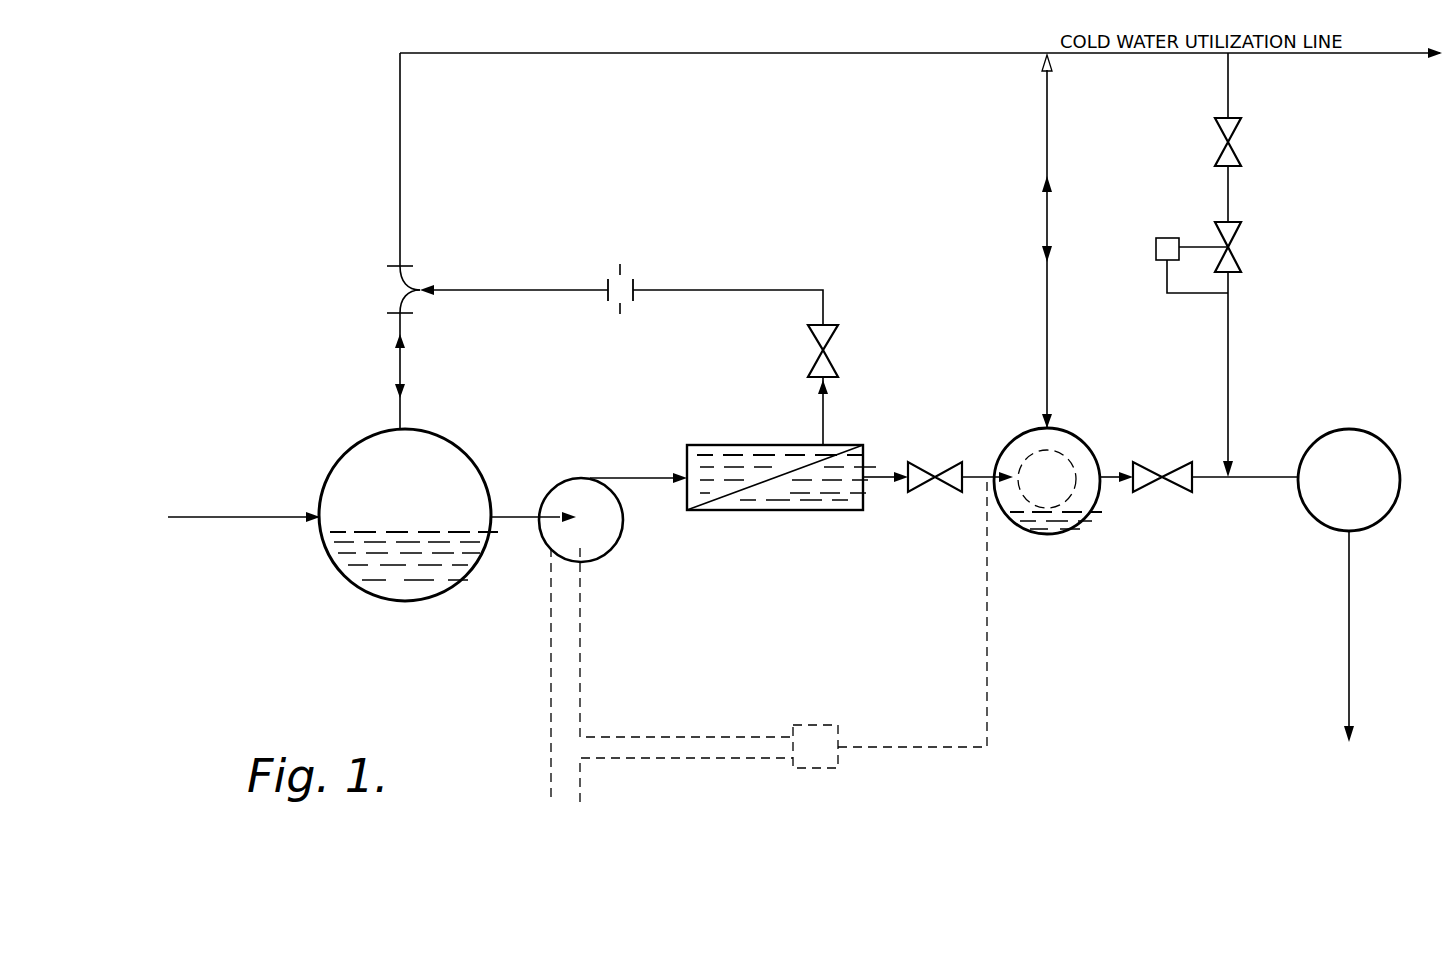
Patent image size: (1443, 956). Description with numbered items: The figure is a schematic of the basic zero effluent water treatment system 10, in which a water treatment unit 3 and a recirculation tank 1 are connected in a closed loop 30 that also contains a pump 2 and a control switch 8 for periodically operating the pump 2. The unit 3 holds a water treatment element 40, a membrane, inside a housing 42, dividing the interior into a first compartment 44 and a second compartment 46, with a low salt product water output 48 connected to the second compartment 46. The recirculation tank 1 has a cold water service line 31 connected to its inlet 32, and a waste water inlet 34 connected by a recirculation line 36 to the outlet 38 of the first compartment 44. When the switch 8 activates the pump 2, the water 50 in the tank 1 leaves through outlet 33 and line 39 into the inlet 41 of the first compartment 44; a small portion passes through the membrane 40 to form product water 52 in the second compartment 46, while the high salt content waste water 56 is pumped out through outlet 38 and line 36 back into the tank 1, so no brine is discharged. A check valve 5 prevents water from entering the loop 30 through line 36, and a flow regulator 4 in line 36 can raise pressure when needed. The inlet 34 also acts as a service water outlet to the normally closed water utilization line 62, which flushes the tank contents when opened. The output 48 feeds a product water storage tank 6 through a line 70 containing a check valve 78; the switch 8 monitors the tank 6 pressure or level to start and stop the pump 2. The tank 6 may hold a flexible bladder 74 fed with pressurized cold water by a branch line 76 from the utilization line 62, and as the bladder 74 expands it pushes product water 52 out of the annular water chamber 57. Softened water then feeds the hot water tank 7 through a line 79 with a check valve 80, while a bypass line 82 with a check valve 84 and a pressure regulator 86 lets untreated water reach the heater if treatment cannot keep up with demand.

The basic system 10 is at (627, 22).
The water utilization line 62 is at (400, 152).
The recirculation line 36 is at (468, 290).
The flow regulator 4 is at (620, 270).
The closed loop 30 is at (730, 290).
The check valve 5 is at (808, 338).
The outlet 38 is at (830, 444).
The recirculation tank 1 is at (352, 440).
The water 50 is at (423, 582).
The cold water service line 31 is at (235, 516).
The inlet 32 is at (319, 512).
The waste water inlet 34 is at (402, 428).
The outlet 33 is at (492, 515).
The pump 2 is at (605, 563).
The line 39 is at (653, 481).
The inlet 41 is at (684, 482).
The water treatment unit 3 is at (687, 456).
The water treatment element 40 is at (790, 468).
The housing 42 is at (734, 445).
The first compartment 44 is at (716, 445).
The high salt content waste water 56 is at (712, 487).
The second compartment 46 is at (866, 507).
The product water 52 is at (832, 500).
The product water output 48 is at (884, 462).
The check valve 78 is at (944, 460).
The line 70 is at (968, 472).
The product water storage tank 6 is at (1066, 428).
The annular water chamber 57 is at (1080, 450).
The flexible bladder 74 is at (1092, 524).
The branch line 76 is at (1047, 356).
The bypass line 82 is at (1228, 95).
The check valve 84 is at (1218, 146).
The pressure regulator 86 is at (1240, 222).
The line 79 is at (1208, 477).
The check valve 80 is at (1143, 460).
The hot water tank 7 is at (1376, 430).
The control switch 8 is at (814, 724).